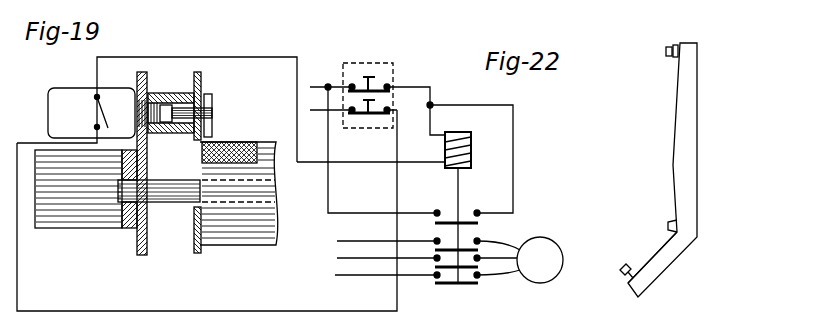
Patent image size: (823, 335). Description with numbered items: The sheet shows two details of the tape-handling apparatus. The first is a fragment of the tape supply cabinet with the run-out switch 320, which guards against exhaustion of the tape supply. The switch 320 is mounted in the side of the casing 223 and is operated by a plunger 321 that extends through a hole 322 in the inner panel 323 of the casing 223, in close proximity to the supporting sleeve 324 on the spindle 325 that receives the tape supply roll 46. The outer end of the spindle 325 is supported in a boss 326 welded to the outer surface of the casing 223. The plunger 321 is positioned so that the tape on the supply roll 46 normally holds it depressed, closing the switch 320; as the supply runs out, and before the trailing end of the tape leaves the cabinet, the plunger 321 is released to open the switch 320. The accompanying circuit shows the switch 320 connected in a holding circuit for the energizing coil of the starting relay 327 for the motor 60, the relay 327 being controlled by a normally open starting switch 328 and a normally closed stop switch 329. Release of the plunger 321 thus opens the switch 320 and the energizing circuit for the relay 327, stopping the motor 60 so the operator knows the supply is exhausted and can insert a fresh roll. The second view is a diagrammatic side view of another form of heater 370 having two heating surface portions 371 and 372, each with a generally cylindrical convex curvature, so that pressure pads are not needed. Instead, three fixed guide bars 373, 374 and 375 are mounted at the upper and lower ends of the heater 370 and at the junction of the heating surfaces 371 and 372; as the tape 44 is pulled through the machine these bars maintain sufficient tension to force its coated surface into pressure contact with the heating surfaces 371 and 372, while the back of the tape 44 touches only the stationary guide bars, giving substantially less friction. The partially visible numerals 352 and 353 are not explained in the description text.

In FIG. 19, the run-out switch 320 is at (60, 93).
In FIG. 19, the inner panel 323 is at (200, 87).
In FIG. 19, the hole 322 is at (203, 97).
In FIG. 19, the plunger 321 is at (210, 115).
In FIG. 19, the tape supply roll 46 is at (237, 141).
In FIG. 19, the supporting sleeve 324 is at (200, 160).
In FIG. 19, the boss 326 is at (63, 224).
In FIG. 19, the casing 223 is at (140, 256).
In FIG. 19, the spindle 325 is at (167, 205).
In FIG. 22, the starting switch 328 is at (362, 88).
In FIG. 22, the stop switch 329 is at (362, 113).
In FIG. 22, the starting relay 327 is at (472, 142).
In FIG. 22, the motor 60 is at (538, 237).
In FIG. 22, the tape 44 is at (627, 268).
In FIG. 22, the heater 370 is at (695, 148).
In FIG. 22, the heating surface portion 371 is at (675, 115).
In FIG. 22, the heating surface portion 372 is at (655, 250).
In FIG. 22, the fixed guide bar 373 is at (670, 55).
In FIG. 22, the fixed guide bar 374 is at (670, 222).
In FIG. 22, the fixed guide bar 375 is at (632, 268).
In FIG. 22, the member 352 is at (644, 326).
In FIG. 22, the member 353 is at (700, 327).